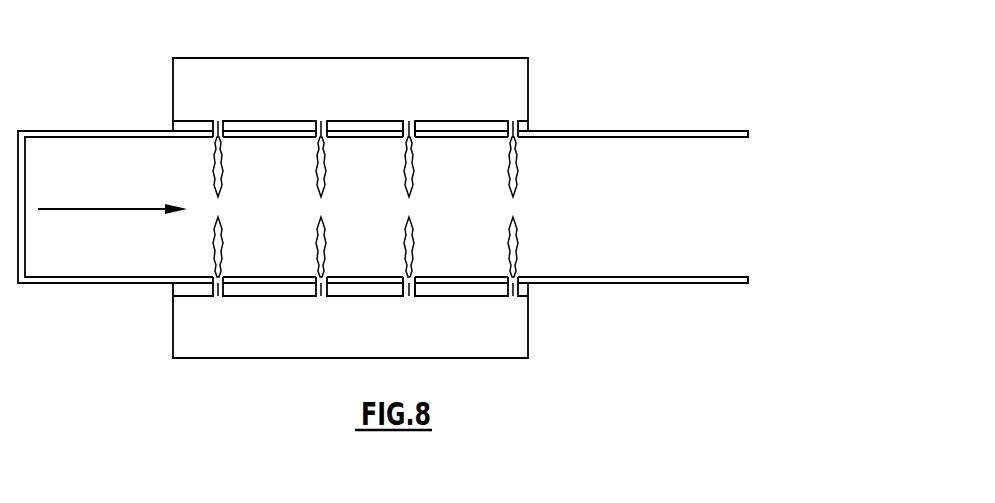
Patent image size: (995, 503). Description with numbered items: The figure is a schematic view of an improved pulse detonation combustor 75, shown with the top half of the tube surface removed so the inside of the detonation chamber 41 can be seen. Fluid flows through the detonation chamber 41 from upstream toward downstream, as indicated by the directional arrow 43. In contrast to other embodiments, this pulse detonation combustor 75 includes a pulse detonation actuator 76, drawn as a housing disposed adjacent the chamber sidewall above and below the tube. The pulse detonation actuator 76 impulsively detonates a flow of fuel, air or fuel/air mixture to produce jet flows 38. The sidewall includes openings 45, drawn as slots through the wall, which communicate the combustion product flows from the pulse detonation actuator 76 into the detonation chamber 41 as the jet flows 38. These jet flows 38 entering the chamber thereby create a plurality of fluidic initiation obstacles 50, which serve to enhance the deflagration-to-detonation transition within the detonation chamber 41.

The improved pulse detonation combustor 75 is at (630, 68).
The pulse detonation actuator 76 is at (419, 74).
The detonation chamber 41 is at (706, 209).
The directional arrow 43 is at (121, 209).
The openings 45 is at (404, 127).
The initiation obstacles 50 is at (518, 172).
The jet flows 38 is at (328, 246).